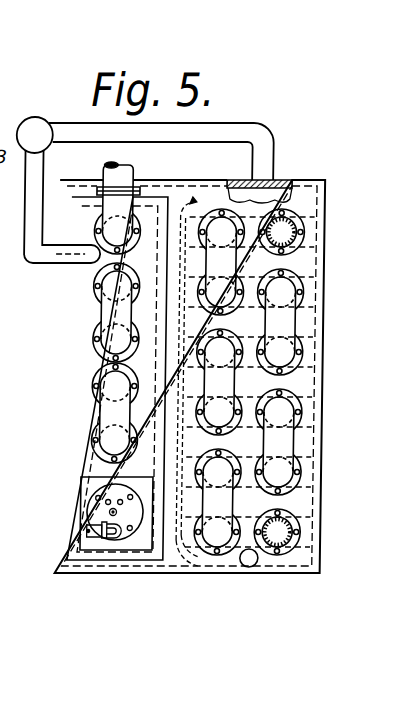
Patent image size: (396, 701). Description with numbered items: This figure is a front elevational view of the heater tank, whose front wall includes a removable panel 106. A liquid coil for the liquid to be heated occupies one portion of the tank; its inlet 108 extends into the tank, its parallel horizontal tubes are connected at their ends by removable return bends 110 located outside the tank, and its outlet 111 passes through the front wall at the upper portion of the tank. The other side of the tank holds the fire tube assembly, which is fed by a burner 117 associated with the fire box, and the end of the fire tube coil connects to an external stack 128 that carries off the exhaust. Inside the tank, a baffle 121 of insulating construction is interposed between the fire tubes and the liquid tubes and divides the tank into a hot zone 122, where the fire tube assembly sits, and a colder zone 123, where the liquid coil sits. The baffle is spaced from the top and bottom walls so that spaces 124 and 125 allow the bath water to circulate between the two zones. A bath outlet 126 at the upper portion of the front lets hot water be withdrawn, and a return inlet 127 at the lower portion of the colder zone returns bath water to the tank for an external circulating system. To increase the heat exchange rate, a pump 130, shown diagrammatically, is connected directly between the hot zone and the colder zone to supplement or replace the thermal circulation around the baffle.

The removable panel 106 is at (92, 463).
The inlet 108 is at (293, 544).
The removable return bends 110 is at (292, 442).
The outlet 111 is at (294, 241).
The burner 117 is at (88, 518).
The baffle 121 is at (177, 548).
The hot zone 122 is at (93, 362).
The colder zone 123 is at (303, 381).
The space 124 is at (179, 561).
The space 125 is at (191, 202).
The bath outlet 126 is at (46, 276).
The return inlet 127 is at (254, 567).
The external stack 128 is at (133, 173).
The pump 130 is at (50, 99).